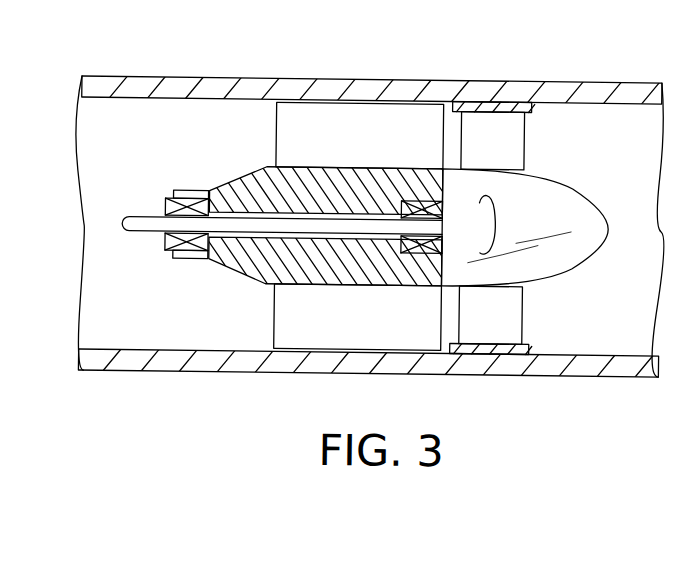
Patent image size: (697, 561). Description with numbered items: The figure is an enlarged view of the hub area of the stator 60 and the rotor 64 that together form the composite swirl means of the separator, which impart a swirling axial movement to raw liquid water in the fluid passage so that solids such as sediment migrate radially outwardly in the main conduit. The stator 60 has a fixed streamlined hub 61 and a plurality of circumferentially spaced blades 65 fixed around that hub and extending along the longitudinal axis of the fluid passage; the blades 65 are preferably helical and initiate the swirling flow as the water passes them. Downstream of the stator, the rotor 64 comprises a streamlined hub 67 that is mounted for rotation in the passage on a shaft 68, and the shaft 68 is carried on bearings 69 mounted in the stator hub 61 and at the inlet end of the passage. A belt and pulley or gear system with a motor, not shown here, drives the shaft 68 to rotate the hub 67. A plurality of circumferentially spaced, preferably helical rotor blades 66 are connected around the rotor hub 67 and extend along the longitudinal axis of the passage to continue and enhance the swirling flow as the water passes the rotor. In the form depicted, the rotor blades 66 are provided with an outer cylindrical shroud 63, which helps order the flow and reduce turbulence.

The stator 60 is at (276, 383).
The stator hub 61 is at (265, 188).
The outer cylindrical shroud 63 is at (485, 106).
The rotor 64 is at (565, 72).
The stator blades 65 is at (293, 315).
The rotor blades 66 is at (507, 132).
The rotor hub 67 is at (548, 191).
The shaft 68 is at (147, 214).
The bearings 69 is at (423, 200).